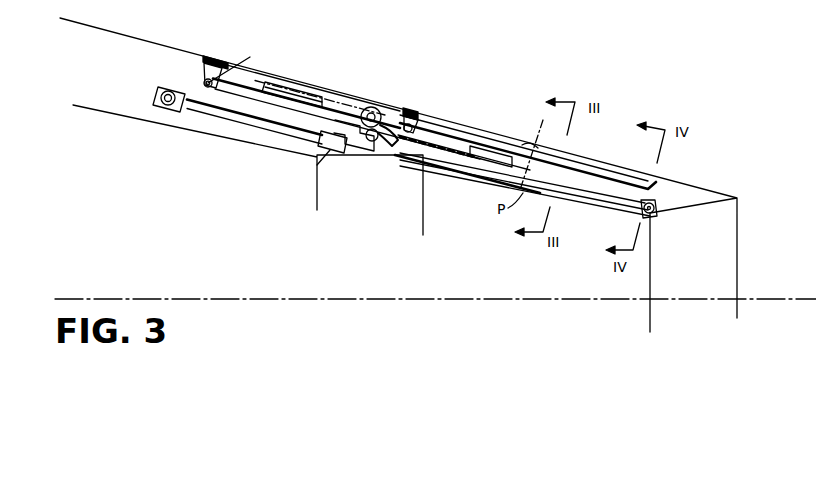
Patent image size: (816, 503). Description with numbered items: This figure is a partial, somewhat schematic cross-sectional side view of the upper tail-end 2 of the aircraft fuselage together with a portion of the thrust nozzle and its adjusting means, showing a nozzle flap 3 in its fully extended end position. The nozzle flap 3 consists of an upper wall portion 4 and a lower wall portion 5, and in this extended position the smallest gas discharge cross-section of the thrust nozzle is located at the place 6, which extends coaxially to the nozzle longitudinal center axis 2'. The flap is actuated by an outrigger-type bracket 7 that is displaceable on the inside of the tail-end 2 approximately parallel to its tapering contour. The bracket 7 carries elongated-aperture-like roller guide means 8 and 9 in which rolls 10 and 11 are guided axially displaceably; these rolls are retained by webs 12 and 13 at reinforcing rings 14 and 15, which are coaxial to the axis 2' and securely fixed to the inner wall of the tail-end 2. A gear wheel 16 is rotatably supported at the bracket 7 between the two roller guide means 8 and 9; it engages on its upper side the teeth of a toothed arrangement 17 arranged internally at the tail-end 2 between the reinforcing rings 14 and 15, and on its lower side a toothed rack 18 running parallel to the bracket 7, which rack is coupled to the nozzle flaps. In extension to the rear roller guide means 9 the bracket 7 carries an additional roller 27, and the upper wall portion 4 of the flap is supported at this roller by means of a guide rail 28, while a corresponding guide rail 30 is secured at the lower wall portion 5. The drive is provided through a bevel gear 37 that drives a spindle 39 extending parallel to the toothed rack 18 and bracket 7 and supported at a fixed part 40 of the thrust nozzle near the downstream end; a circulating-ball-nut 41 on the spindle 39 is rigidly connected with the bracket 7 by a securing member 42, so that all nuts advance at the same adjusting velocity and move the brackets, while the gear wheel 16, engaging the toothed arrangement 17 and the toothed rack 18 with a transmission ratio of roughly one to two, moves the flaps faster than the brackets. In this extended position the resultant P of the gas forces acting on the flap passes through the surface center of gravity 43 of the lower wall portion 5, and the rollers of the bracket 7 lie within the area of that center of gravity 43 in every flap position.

The tail-end of the aircraft fuselage 2 is at (372, 78).
The nozzle longitudinal center axis 2' is at (435, 220).
The nozzle flap 3 is at (735, 163).
The upper wall portion 4 is at (672, 183).
The lower wall portion 5 is at (587, 198).
The place of smallest gas discharge cross-section 6 is at (653, 214).
The outrigger-type bracket 7 is at (332, 104).
The roller guide means 8 is at (278, 100).
The roller guide means 9 is at (480, 150).
The roll 10 is at (238, 63).
The roll 11 is at (420, 123).
The web 12 is at (198, 70).
The web 13 is at (397, 110).
The reinforcing ring 14 is at (228, 56).
The reinforcing ring 15 is at (408, 107).
The gear wheel 16 is at (373, 141).
The toothed arrangement 17 is at (303, 90).
The toothed rack 18 is at (392, 146).
The roller 27 is at (535, 160).
The guide rail 28 is at (622, 175).
The guide rail 30 is at (610, 197).
The bevel gear 37 is at (155, 92).
The spindle 39 is at (225, 115).
The fixed part of the thrust nozzle 40 is at (352, 137).
The circulating-ball-nut 41 is at (328, 147).
The securing member 42 is at (328, 123).
The surface center of gravity 43 is at (527, 143).